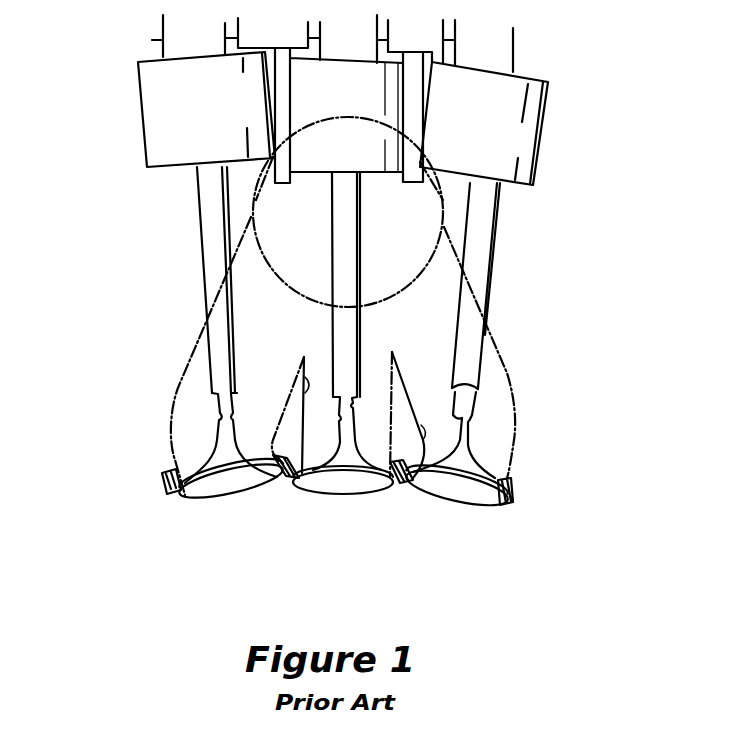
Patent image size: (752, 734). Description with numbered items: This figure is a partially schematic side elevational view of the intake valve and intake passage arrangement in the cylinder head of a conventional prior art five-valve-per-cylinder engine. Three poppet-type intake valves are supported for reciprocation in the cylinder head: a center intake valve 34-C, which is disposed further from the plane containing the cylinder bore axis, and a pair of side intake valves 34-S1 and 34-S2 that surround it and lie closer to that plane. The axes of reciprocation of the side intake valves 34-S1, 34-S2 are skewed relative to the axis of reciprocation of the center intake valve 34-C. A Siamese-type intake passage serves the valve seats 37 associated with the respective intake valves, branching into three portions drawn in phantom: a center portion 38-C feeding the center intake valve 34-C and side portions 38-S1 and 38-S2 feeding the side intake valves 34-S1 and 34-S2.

The side intake valve 34-S1 is at (210, 498).
The center intake valve 34-C is at (352, 487).
The side intake valve 34-S2 is at (463, 493).
The valve seat 37 is at (513, 493).
The side portion of intake passage 38-S1 is at (176, 434).
The center portion of intake passage 38-C is at (300, 373).
The side portion of intake passage 38-S2 is at (510, 433).